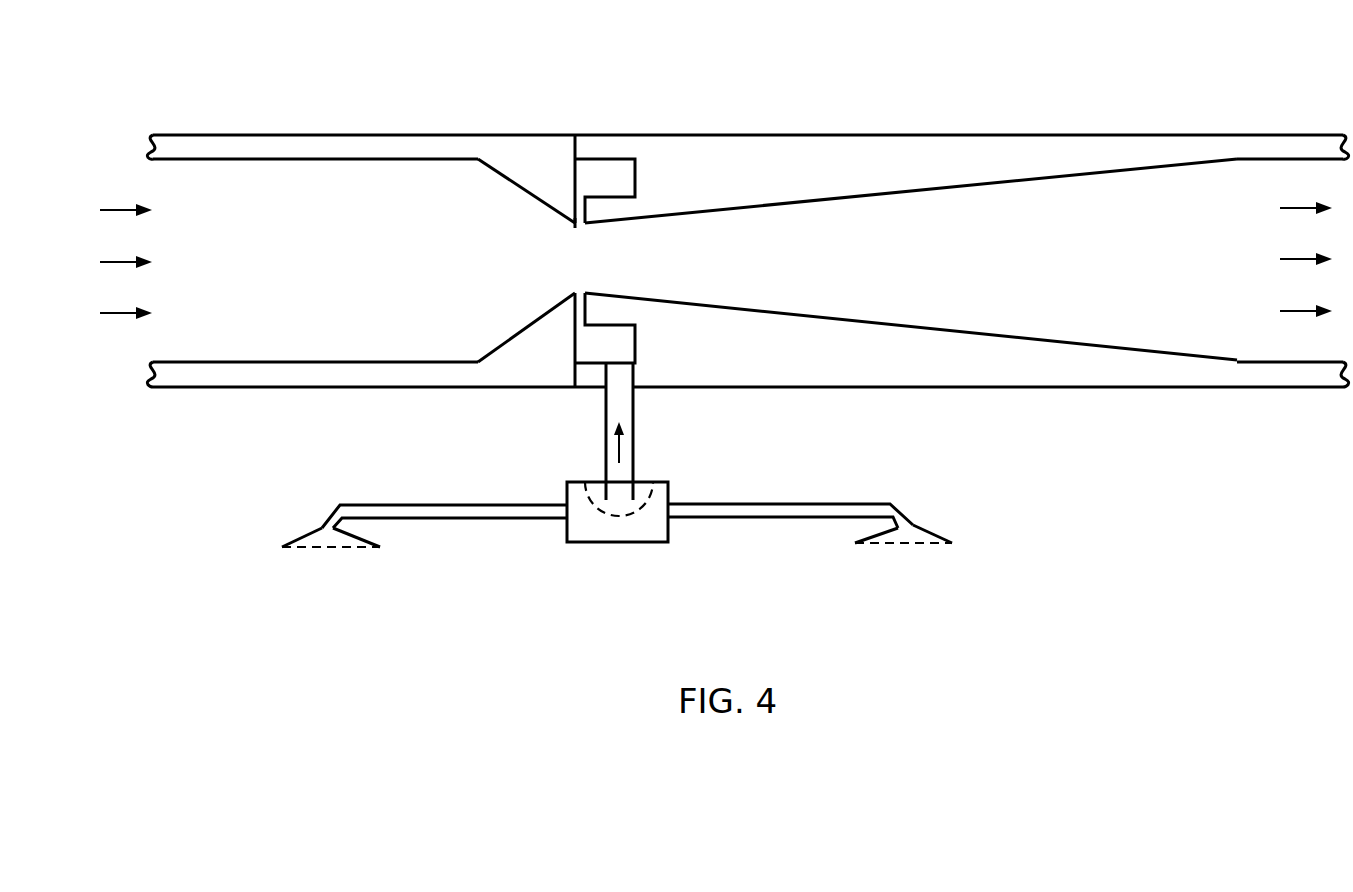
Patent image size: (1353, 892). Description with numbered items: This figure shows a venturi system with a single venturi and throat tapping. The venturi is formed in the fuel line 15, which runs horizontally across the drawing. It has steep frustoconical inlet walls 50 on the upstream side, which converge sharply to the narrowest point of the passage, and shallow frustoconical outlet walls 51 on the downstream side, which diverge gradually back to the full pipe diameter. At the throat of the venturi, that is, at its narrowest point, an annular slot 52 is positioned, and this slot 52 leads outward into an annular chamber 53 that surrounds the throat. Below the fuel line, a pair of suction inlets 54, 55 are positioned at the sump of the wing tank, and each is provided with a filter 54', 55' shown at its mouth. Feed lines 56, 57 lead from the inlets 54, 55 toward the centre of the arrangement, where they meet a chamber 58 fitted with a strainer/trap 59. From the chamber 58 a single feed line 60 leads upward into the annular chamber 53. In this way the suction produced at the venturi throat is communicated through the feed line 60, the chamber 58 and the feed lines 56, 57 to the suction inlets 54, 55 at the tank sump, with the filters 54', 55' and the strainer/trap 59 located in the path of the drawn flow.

The fuel line 15 is at (318, 133).
The frustoconical inlet walls 50 is at (521, 331).
The frustoconical outlet walls 51 is at (799, 205).
The annular slot 52 is at (578, 226).
The annular chamber 53 is at (617, 157).
The suction inlet 54 is at (316, 516).
The filter 54' is at (331, 576).
The suction inlet 55 is at (911, 507).
The filter 55' is at (903, 575).
The feed line 56 is at (460, 504).
The feed line 57 is at (757, 503).
The chamber 58 is at (608, 545).
The strainer/trap 59 is at (635, 513).
The feed line 60 is at (606, 420).